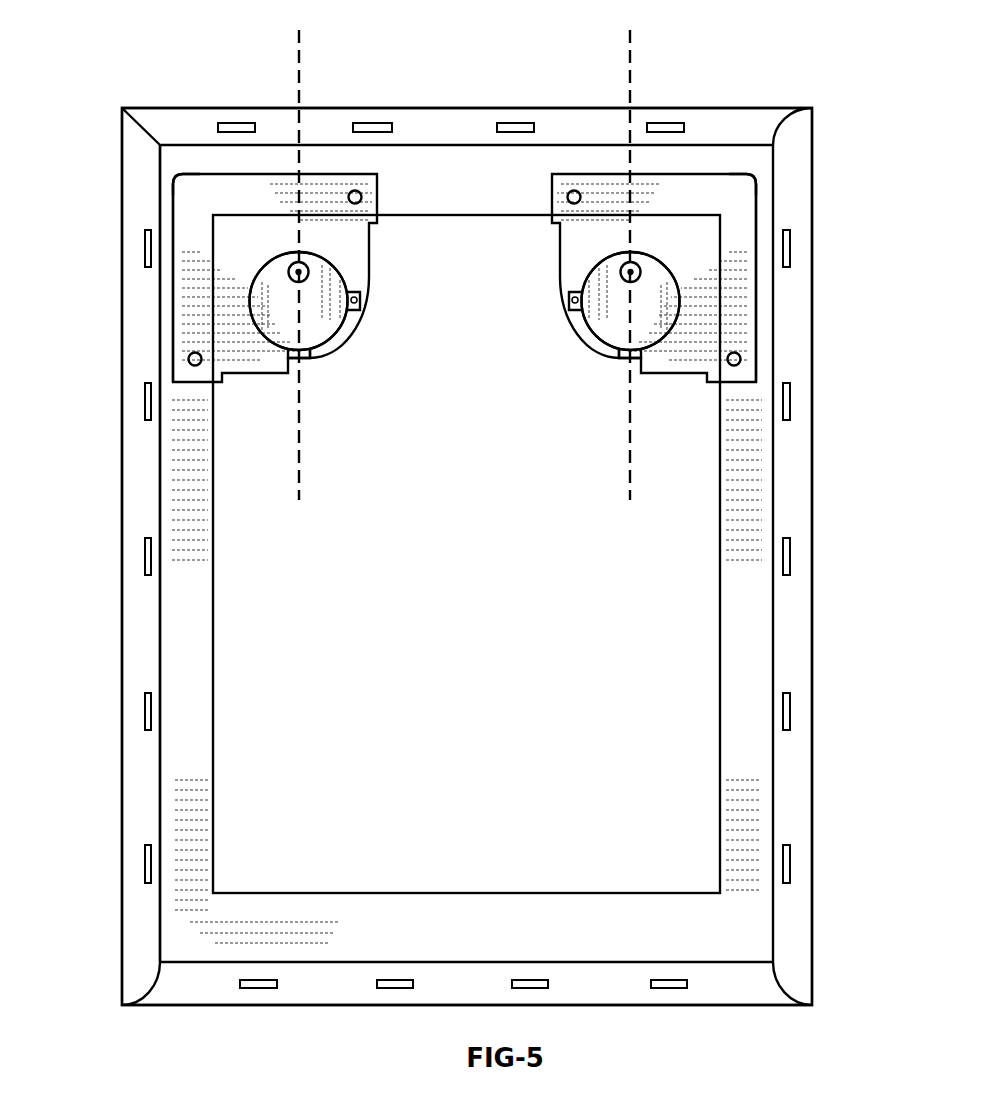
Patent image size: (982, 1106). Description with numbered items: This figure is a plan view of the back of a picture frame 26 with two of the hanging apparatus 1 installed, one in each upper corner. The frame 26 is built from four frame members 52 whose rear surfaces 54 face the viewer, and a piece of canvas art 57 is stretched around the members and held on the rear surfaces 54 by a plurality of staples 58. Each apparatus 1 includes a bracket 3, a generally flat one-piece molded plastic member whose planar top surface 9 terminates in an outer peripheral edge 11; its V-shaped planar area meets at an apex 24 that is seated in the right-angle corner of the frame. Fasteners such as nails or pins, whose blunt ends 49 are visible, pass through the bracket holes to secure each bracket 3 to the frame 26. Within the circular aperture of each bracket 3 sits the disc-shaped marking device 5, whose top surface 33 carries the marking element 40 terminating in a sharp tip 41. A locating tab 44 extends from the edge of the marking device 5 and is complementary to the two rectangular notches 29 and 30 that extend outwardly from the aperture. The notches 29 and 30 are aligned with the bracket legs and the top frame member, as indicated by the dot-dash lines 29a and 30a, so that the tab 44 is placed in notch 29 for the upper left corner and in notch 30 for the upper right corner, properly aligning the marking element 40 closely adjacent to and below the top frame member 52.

The apparatus 1 is at (520, 550).
The bracket 3 is at (204, 160).
The marking device 5 is at (261, 257).
The top surface 9 is at (192, 195).
The outer peripheral edge 11 is at (173, 287).
The apex 24 is at (178, 178).
The picture frame 26 is at (302, 1015).
The notch 29 is at (569, 298).
The dot-dash line 29a is at (298, 484).
The notch 30 is at (360, 298).
The dot-dash line 30a is at (631, 484).
The top surface 33 is at (256, 303).
The marking element 40 is at (309, 272).
The tip 41 is at (292, 265).
The locating tab 44 is at (307, 354).
The blunt end 49 is at (362, 197).
The frame member 52 is at (362, 910).
The rear surface 54 is at (495, 915).
The canvas art 57 is at (133, 593).
The staples 58 is at (147, 565).